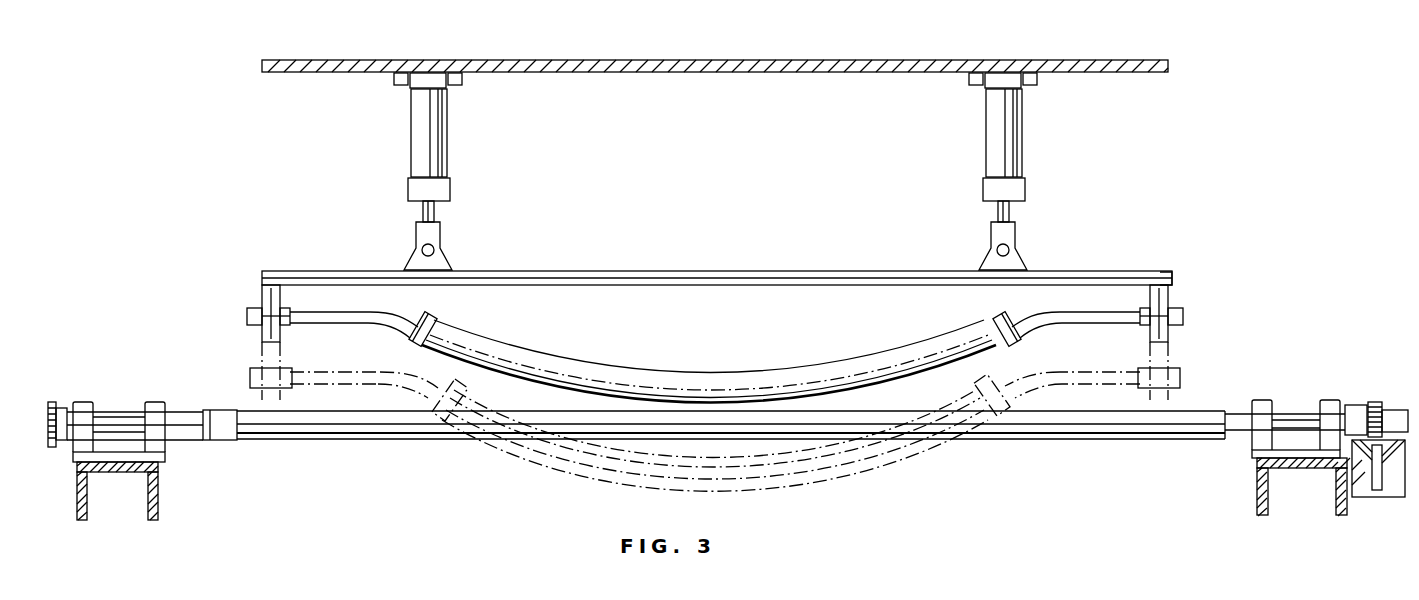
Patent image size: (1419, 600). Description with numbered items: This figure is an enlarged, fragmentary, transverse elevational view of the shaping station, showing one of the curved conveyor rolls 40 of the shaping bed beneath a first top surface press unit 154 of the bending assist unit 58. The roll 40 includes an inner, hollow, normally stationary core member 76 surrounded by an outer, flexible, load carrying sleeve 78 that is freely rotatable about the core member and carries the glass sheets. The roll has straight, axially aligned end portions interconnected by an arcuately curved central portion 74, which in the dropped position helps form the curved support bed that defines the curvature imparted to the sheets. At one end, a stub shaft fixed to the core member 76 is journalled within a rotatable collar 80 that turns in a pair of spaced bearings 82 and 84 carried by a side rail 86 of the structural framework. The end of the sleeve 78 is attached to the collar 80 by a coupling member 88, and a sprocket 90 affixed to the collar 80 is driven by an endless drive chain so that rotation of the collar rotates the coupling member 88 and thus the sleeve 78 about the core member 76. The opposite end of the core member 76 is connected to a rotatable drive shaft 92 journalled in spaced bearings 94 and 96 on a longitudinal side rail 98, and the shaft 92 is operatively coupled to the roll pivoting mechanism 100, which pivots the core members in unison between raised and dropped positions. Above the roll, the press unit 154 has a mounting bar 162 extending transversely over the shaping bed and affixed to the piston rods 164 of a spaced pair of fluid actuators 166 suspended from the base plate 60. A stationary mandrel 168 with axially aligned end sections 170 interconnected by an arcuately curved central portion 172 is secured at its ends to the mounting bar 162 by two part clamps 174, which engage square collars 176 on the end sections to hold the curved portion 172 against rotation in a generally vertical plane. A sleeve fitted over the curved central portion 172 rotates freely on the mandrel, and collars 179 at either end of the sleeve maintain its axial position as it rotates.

The base plate 60 is at (722, 58).
The fluid actuator 166 is at (440, 127).
The piston rod 164 is at (437, 211).
The bending assist unit 58 is at (1072, 213).
The mounting bar 162 is at (641, 271).
The first top surface press unit 154 is at (1172, 268).
The two part clamp 174 is at (265, 341).
The square collar 176 is at (262, 312).
The end section 170 is at (312, 316).
The stationary mandrel 168 is at (369, 305).
The collar 179 is at (433, 320).
The curved central portion 172 is at (1022, 333).
The curved central portion 74 is at (832, 492).
The conveyor roll 40 is at (1078, 441).
The sleeve 78 is at (276, 432).
The coupling member 88 is at (219, 409).
The rotatable collar 80 is at (118, 410).
The bearing 84 is at (81, 403).
The bearing 82 is at (155, 403).
The sprocket 90 is at (51, 449).
The side rail 86 is at (160, 502).
The core member 76 is at (1238, 413).
The bearing 94 is at (1262, 400).
The drive shaft 92 is at (1296, 419).
The bearing 96 is at (1332, 400).
The roll pivoting mechanism 100 is at (1386, 398).
The longitudinal side rail 98 is at (1255, 500).